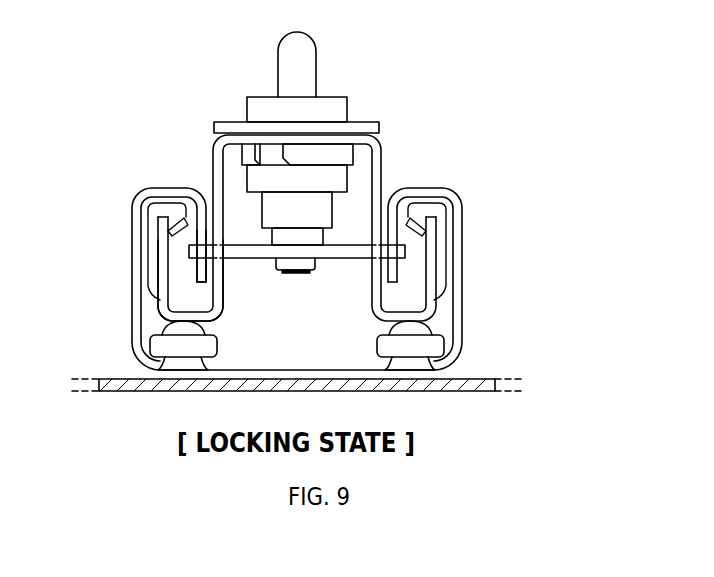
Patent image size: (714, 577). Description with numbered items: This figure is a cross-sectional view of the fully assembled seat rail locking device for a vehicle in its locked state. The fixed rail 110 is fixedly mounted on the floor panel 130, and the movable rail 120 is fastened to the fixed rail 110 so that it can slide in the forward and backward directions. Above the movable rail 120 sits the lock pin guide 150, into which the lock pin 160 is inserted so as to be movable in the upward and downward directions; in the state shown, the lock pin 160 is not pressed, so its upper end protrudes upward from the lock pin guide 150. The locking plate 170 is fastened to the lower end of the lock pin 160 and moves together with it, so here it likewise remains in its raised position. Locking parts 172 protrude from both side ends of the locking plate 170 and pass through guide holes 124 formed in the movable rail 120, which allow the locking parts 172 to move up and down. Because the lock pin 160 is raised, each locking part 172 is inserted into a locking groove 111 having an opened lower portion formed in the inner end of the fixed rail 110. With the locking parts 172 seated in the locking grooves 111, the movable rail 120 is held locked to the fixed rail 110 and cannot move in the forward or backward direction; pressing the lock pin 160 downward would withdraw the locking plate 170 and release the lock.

The fixed rail 110 is at (322, 274).
The locking groove 111 is at (202, 266).
The movable rail 120 is at (330, 231).
The guide hole 124 is at (220, 285).
The floor panel 130 is at (468, 386).
The lock pin guide 150 is at (352, 103).
The lock pin 160 is at (305, 73).
The locking plate 170 is at (344, 262).
The locking part 172 is at (186, 246).